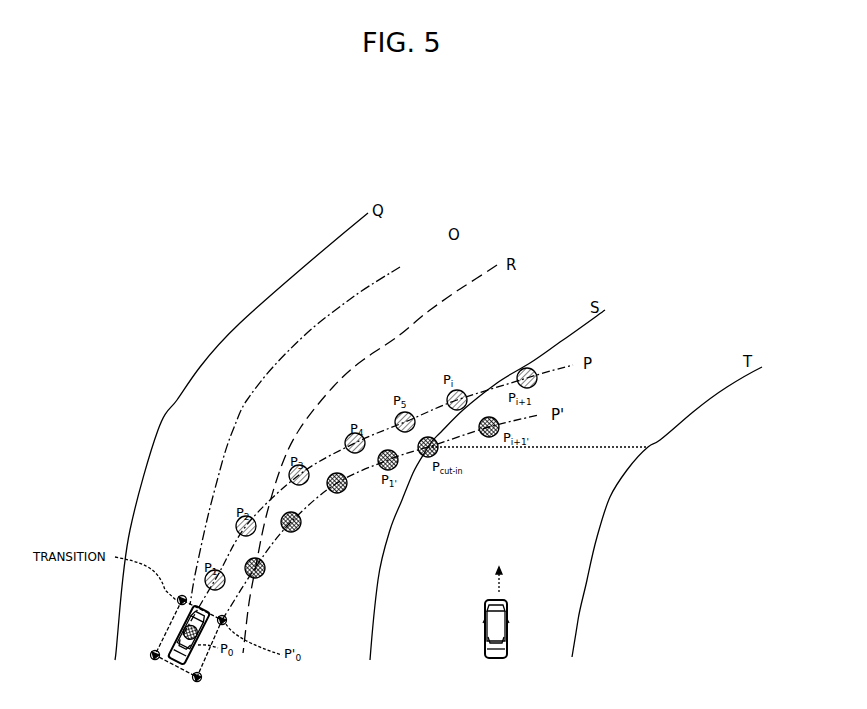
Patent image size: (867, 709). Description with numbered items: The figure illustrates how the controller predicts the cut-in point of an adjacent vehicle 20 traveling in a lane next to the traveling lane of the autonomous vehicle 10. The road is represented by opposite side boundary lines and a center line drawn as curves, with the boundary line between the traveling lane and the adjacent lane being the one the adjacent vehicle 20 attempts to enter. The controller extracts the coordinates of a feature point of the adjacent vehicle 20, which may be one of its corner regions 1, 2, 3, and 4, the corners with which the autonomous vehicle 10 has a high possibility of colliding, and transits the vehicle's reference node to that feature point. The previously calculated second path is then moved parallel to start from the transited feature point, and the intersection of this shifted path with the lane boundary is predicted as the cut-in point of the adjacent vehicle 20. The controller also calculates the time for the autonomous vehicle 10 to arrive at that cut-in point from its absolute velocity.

The autonomous vehicle 10 is at (485, 620).
The adjacent vehicle 20 is at (172, 666).
The corner region 1 is at (177, 591).
The corner region 2 is at (144, 650).
The corner region 3 is at (235, 616).
The corner region 4 is at (207, 682).